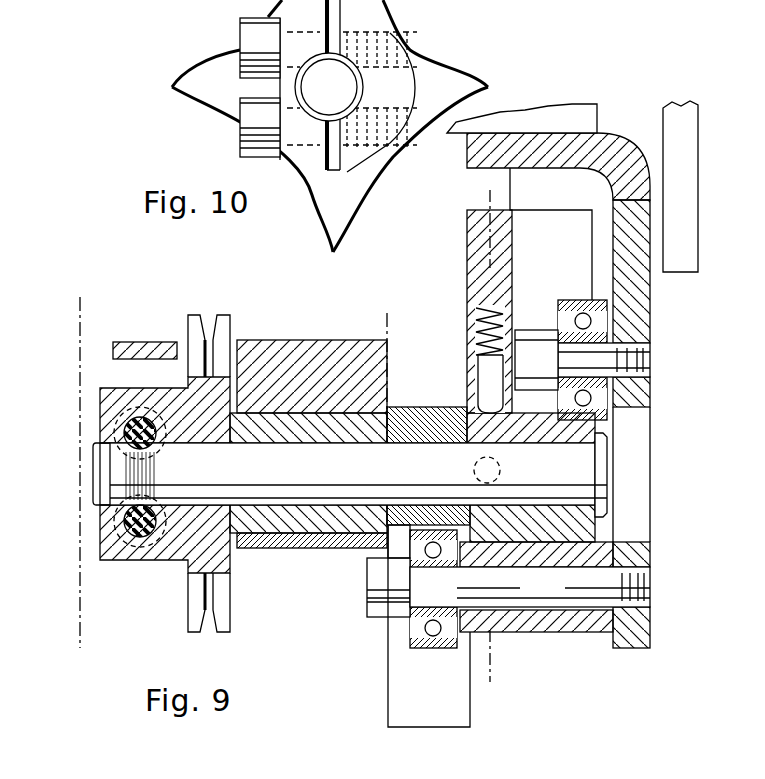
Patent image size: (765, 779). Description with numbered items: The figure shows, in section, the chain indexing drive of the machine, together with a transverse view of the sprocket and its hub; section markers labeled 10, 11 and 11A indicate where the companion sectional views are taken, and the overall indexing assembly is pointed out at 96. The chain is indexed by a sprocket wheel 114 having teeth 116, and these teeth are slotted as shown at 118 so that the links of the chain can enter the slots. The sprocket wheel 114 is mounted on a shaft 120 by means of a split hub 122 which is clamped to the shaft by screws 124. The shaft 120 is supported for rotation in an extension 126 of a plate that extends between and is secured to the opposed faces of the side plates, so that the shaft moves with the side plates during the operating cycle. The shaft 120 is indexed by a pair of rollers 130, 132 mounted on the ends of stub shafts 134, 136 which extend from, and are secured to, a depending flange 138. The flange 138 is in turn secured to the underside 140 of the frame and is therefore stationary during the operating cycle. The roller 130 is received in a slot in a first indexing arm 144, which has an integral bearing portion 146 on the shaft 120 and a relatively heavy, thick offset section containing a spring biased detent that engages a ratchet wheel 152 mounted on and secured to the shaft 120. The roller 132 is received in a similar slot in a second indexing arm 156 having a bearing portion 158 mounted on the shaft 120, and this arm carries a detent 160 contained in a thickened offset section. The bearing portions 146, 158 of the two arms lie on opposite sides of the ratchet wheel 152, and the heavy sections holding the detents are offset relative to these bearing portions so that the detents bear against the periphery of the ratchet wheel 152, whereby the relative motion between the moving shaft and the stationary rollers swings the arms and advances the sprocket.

In FIG. 9, the section line 10- 10 is at (96, 293).
In FIG. 9, the section line 11- 11 is at (403, 309).
In FIG. 9, the section line 11A- 11A is at (508, 186).
In FIG. 9, the drive assembly 96 is at (316, 556).
In FIG. 10, the sprocket wheel 114 is at (218, 114).
In FIG. 9, the sprocket wheel 114 is at (157, 556).
In FIG. 10, the teeth 116 is at (175, 78).
In FIG. 9, the slots 118 is at (208, 624).
In FIG. 10, the shaft 120 is at (345, 90).
In FIG. 9, the shaft 120 is at (94, 464).
In FIG. 10, the split hub 122 is at (348, 174).
In FIG. 10, the screws 124 is at (248, 33).
In FIG. 9, the screws 124 is at (126, 532).
In FIG. 9, the extension 126 is at (299, 340).
In FIG. 9, the roller 130 is at (433, 648).
In FIG. 9, the roller 132 is at (607, 306).
In FIG. 9, the stub shaft 134 is at (557, 595).
In FIG. 9, the stub shaft 136 is at (650, 357).
In FIG. 9, the depending flange 138 is at (640, 401).
In FIG. 9, the underside 140 is at (592, 117).
In FIG. 9, the first indexing arm 144 is at (462, 700).
In FIG. 9, the bearing portion 146 is at (431, 414).
In FIG. 9, the ratchet wheel 152 is at (504, 428).
In FIG. 9, the indexing arm 156 is at (548, 218).
In FIG. 9, the bearing portion 158 is at (580, 519).
In FIG. 9, the detent 160 is at (491, 370).